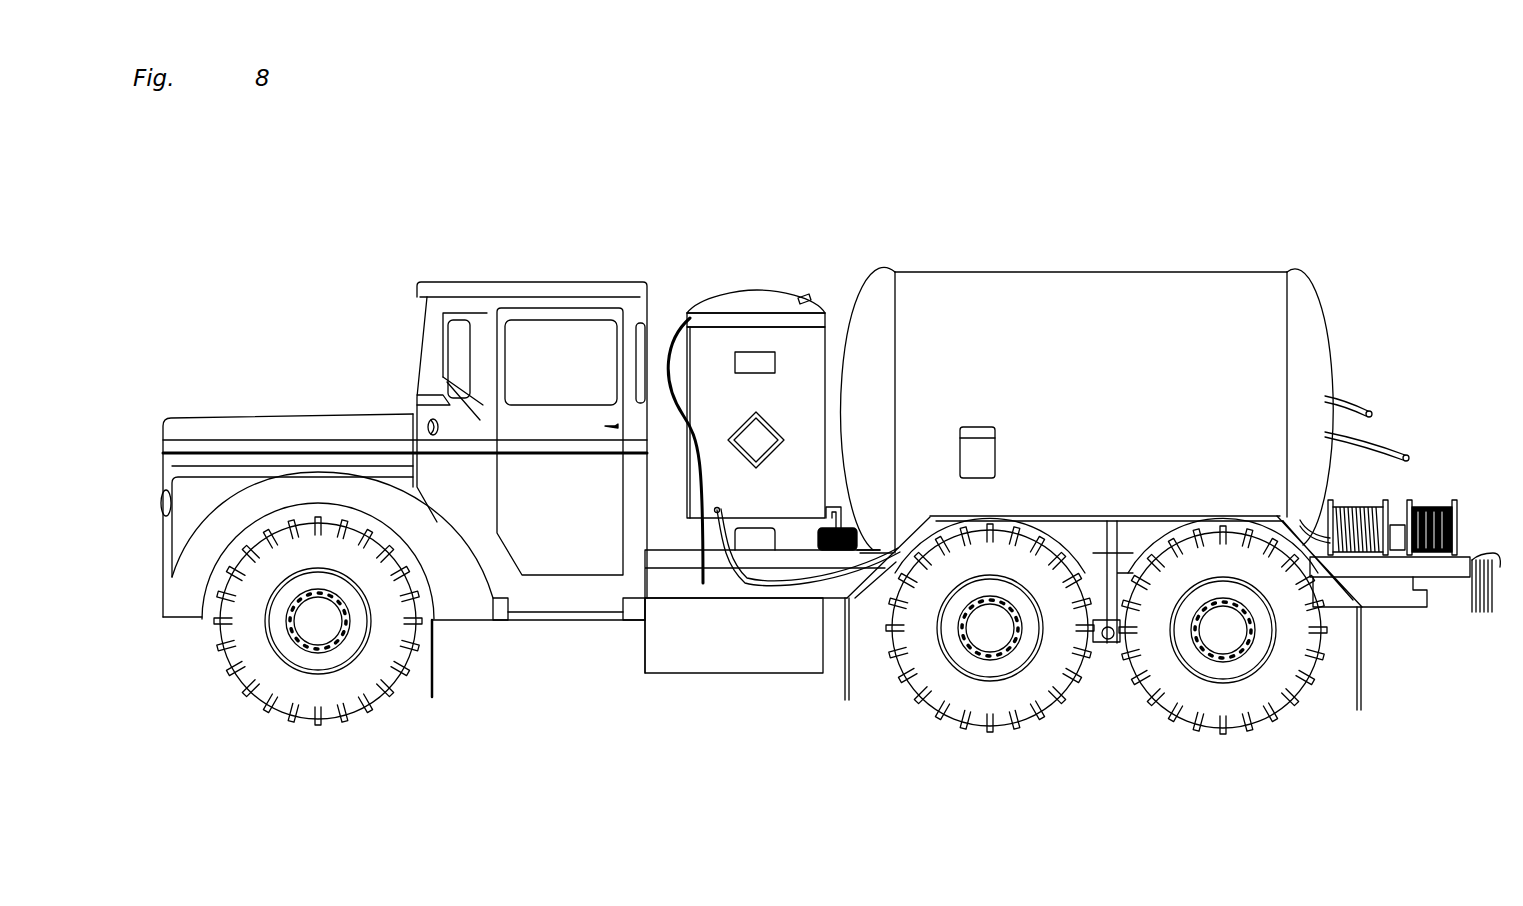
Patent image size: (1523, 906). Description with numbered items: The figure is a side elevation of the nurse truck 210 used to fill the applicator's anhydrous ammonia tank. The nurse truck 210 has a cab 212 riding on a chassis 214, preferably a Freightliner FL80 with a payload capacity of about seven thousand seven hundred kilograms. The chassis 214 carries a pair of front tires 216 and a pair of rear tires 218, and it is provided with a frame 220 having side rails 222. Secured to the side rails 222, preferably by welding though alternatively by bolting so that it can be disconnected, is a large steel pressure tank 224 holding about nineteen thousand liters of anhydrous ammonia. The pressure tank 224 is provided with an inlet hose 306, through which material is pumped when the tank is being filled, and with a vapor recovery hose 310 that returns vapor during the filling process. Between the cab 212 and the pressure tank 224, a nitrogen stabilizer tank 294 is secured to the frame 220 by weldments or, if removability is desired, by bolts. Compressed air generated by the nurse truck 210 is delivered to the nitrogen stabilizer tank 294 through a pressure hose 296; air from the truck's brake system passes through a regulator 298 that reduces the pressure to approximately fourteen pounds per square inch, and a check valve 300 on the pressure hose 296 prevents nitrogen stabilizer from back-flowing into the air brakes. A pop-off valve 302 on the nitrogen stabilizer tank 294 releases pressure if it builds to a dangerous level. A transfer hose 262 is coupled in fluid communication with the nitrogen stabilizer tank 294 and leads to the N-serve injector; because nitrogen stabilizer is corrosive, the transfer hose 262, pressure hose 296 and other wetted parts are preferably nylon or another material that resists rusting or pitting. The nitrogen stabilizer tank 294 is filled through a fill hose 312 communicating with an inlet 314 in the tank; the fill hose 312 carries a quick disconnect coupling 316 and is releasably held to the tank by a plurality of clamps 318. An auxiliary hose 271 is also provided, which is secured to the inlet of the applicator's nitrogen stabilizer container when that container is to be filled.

The nurse truck 210 is at (484, 167).
The cab 212 is at (324, 349).
The chassis 214 is at (601, 663).
The front tires 216 is at (319, 781).
The rear tires 218 is at (920, 764).
The frame 220 is at (1095, 643).
The side rails 222 is at (1392, 597).
The pressure tank 224 is at (1058, 268).
The transfer hose 262 is at (747, 585).
The auxiliary hose 271 is at (1485, 612).
The nitrogen stabilizer tank 294 is at (749, 279).
The pressure hose 296 is at (833, 507).
The regulator 298 is at (863, 550).
The check valve 300 is at (848, 530).
The pop-off valve 302 is at (807, 298).
The inlet hose 306 is at (1387, 445).
The vapor recovery hose 310 is at (1352, 408).
The fill hose 312 is at (682, 312).
The inlet 314 is at (690, 312).
The quick disconnect coupling 316 is at (705, 585).
The clamps 318 is at (683, 422).